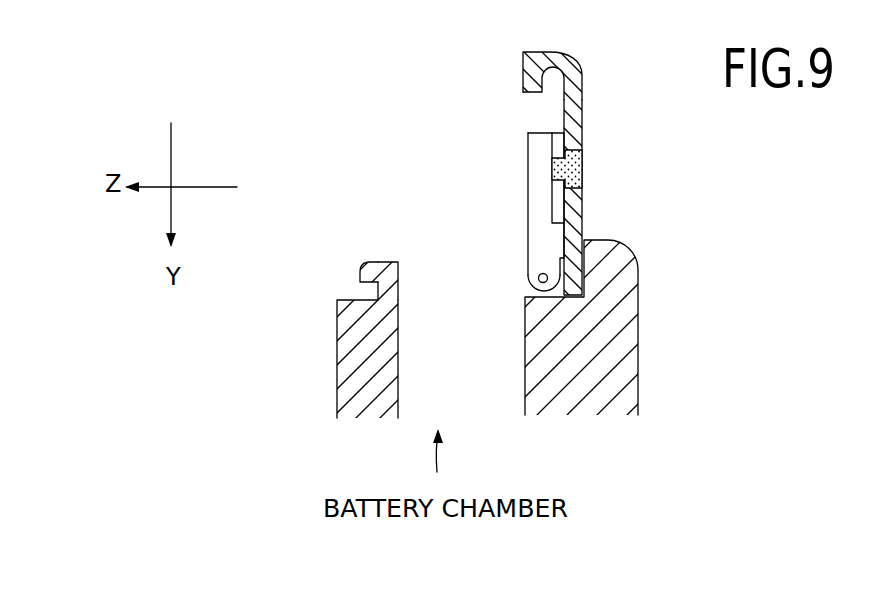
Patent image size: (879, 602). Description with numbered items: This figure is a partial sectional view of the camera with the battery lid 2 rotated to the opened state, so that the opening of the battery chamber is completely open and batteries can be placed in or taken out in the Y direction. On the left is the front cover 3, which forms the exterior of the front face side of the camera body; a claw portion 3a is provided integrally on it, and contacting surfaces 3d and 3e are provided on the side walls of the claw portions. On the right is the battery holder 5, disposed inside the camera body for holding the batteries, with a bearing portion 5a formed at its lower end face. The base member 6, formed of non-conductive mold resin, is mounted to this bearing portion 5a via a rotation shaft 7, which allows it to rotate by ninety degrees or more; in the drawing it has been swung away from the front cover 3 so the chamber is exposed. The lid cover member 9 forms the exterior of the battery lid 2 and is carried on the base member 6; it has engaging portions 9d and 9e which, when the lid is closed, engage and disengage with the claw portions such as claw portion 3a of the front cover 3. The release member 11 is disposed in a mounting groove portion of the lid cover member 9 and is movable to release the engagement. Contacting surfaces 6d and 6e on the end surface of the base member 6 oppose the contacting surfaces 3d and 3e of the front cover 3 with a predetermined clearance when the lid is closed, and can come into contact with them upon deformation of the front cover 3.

The battery lid 2 is at (583, 156).
The front cover 3 is at (350, 361).
The claw portion 3a is at (369, 272).
The contacting surface 3d is at (398, 281).
The contacting surface 3e is at (388, 281).
The battery holder 5 is at (523, 382).
The bearing portion 5a is at (525, 278).
The base member 6 is at (530, 173).
The contacting surface 6d is at (536, 132).
The contacting surface 6e is at (558, 178).
The rotation shaft 7 is at (543, 283).
The lid cover member 9 is at (582, 72).
The engaging portion 9d is at (552, 76).
The engaging portion 9e is at (522, 87).
The release member 11 is at (583, 177).